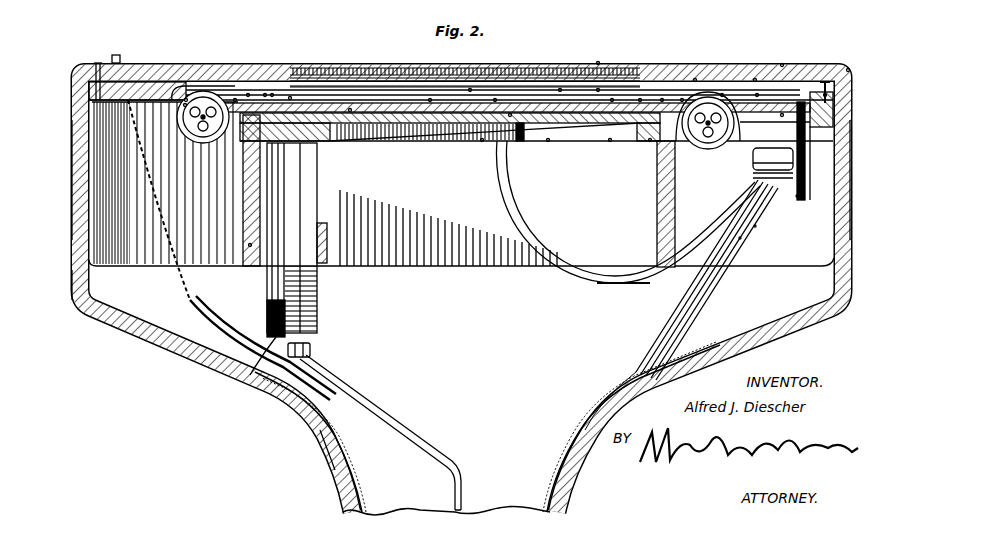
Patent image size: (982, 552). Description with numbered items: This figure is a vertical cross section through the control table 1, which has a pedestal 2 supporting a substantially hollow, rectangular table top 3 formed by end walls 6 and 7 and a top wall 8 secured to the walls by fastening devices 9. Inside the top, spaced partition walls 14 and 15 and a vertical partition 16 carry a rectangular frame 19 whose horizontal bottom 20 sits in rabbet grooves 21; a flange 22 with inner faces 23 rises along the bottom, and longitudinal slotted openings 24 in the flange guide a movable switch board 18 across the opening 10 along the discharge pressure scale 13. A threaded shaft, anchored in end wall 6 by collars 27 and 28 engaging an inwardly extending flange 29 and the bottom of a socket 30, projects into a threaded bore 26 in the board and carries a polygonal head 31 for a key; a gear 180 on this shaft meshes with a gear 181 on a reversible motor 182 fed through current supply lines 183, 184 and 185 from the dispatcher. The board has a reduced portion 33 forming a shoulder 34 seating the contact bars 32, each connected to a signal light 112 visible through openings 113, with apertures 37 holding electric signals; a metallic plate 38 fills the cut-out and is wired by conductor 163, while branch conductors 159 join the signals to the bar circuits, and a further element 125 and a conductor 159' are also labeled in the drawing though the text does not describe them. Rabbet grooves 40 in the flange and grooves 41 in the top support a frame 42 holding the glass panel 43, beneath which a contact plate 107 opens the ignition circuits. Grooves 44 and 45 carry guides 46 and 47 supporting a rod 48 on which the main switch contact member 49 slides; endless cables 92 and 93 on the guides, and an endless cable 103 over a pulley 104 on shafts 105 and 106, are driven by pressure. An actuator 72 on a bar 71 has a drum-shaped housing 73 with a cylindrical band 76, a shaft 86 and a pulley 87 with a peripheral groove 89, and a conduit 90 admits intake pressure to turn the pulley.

The table 1 is at (800, 325).
The pedestal 2 is at (320, 428).
The table top 3 is at (78, 290).
The end wall 6 is at (840, 188).
The end wall 7 is at (75, 178).
The top wall 8 is at (722, 95).
The fastening devices 9 is at (98, 63).
The opening 10 is at (598, 90).
The discharge pressure scale 13 is at (598, 62).
The partition wall 14 is at (252, 260).
The partition wall 15 is at (675, 240).
The vertical partition 16 is at (766, 256).
The switch board 18 is at (510, 115).
The frame 19 is at (682, 100).
The bottom 20 is at (425, 128).
The rabbet grooves 21 is at (235, 150).
The flange 22 is at (220, 100).
The inner faces 23 is at (290, 98).
The slotted openings 24 is at (235, 100).
The threaded bore 26 is at (612, 100).
The collar 27 is at (822, 70).
The collar 28 is at (825, 95).
The flange 29 is at (812, 127).
The socket 30 is at (833, 150).
The head 31 is at (848, 70).
The contact bars 32 is at (522, 140).
The reduced portion 33 is at (367, 140).
The shoulder 34 is at (548, 140).
The apertures 37 is at (782, 65).
The metallic plate 38 is at (350, 110).
The rabbet grooves 40 is at (265, 95).
The grooves 41 is at (248, 95).
The frame 42 is at (640, 100).
The glass panel 43 is at (495, 100).
The groove 44 is at (290, 150).
The groove 45 is at (650, 140).
The guide 46 is at (272, 95).
The guide 47 is at (662, 100).
The rod 48 is at (430, 100).
The main switch contact member 49 is at (470, 90).
The bar 71 is at (325, 240).
The actuator 72 is at (275, 375).
The housing 73 is at (310, 275).
The cylindrical band 76 is at (305, 308).
The shaft 86 is at (250, 245).
The pulley 87 is at (225, 358).
The peripheral groove 89 is at (255, 370).
The conduit 90 is at (412, 436).
The endless cable 92 is at (268, 310).
The endless cable 93 is at (610, 140).
The endless cable 103 is at (482, 140).
The pulley 104 is at (185, 105).
The shaft 105 is at (186, 100).
The shaft 106 is at (720, 150).
The plate 107 is at (560, 90).
The signal light 112 is at (757, 95).
The openings 113 is at (755, 80).
The plate 125 is at (782, 115).
The branch conductors 159 is at (628, 212).
The tube end 159' is at (705, 51).
The conductor 163 is at (590, 283).
The gear 180 is at (790, 112).
The gear 181 is at (797, 196).
The reversible motor 182 is at (753, 178).
The current supply line 183 is at (712, 296).
The current supply line 184 is at (740, 238).
The current supply line 185 is at (755, 226).